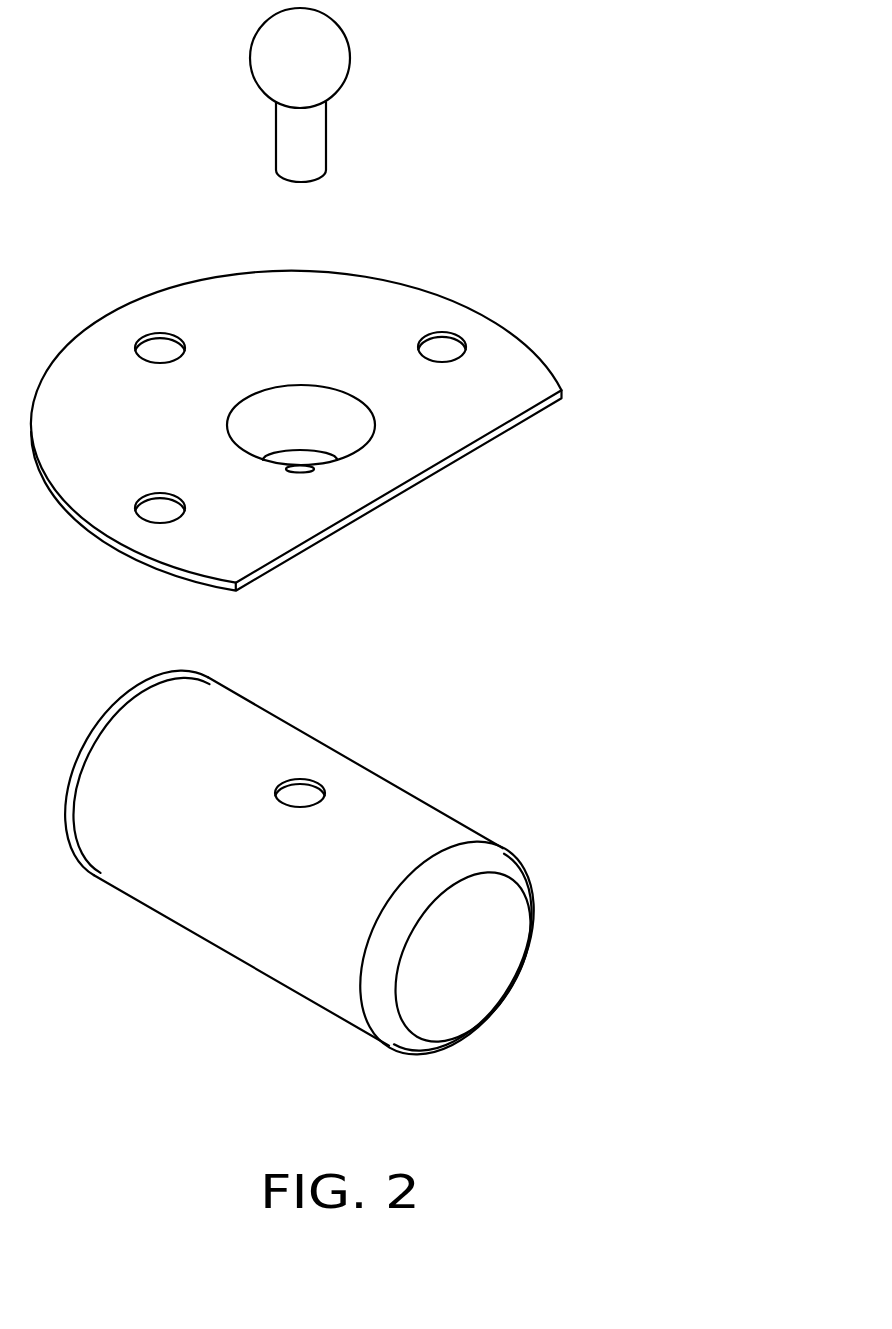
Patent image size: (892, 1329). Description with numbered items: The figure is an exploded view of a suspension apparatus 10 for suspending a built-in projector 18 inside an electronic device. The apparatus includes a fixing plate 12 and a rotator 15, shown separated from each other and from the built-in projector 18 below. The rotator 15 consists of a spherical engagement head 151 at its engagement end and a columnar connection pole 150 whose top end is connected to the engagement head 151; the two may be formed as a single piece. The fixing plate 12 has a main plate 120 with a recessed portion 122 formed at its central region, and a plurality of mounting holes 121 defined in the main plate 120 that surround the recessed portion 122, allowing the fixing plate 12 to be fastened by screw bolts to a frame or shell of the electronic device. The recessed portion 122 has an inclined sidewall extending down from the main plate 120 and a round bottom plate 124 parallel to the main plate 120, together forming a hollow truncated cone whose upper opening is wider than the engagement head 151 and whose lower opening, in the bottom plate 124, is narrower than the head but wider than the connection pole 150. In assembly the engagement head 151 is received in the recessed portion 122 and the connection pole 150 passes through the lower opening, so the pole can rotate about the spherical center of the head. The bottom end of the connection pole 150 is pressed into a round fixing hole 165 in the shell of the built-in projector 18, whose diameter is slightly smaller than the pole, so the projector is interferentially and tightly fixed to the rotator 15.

The suspension apparatus 10 is at (493, 92).
The fixing plate 12 is at (597, 307).
The main plate 120 is at (502, 372).
The mounting holes 121 is at (443, 350).
The recessed portion 122 is at (316, 413).
The bottom plate 124 is at (320, 465).
The rotator 15 is at (433, 56).
The connection pole 150 is at (311, 157).
The engagement head 151 is at (330, 53).
The built-in projector 18 is at (317, 878).
The fixing hole 165 is at (307, 788).